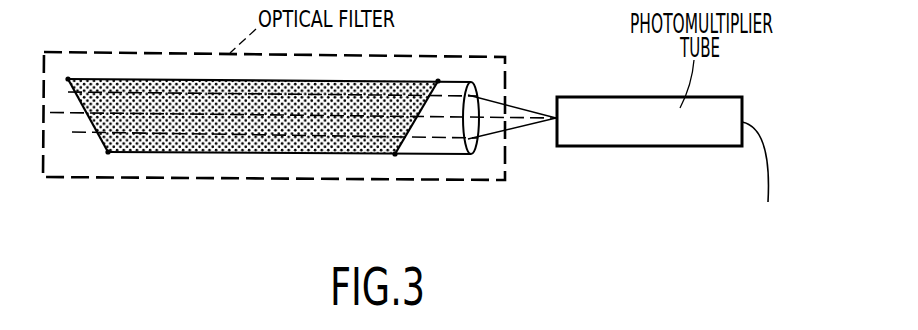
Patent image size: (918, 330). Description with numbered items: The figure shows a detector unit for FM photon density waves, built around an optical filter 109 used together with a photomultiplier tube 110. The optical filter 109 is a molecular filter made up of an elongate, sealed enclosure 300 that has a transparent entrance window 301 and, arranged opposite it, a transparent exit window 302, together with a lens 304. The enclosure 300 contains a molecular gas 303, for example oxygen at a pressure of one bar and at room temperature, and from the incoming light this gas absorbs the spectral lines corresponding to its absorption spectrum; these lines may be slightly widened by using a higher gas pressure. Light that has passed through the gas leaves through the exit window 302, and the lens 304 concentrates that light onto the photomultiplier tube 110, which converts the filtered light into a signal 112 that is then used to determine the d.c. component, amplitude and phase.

The optical filter 109 is at (277, 180).
The photomultiplier tube 110 is at (612, 97).
The signal 112 is at (766, 199).
The enclosure 300 is at (177, 154).
The entrance window 301 is at (95, 126).
The exit window 302 is at (418, 162).
The molecular gas 303 is at (181, 82).
The lens 304 is at (473, 83).